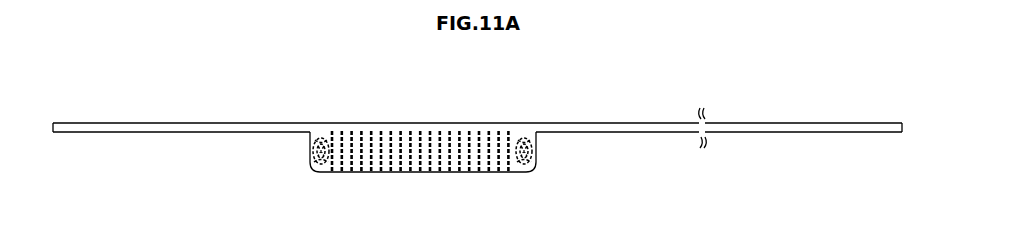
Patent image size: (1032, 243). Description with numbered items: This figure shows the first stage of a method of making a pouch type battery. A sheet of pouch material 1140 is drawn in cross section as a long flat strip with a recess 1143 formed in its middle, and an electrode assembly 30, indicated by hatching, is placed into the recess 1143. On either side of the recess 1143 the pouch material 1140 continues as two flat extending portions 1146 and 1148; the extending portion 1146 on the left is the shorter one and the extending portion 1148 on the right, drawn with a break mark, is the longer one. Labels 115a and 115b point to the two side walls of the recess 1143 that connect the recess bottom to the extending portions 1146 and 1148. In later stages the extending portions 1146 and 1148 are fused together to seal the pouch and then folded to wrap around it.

The pouch material 1140 is at (413, 123).
The extending portion 1146 is at (165, 123).
The extending portion 1148 is at (812, 123).
The recess 1143 is at (347, 173).
The first sidewall of recess 115a is at (536, 158).
The second sidewall of recess 115b is at (310, 154).
The electrode assembly 30 is at (483, 160).